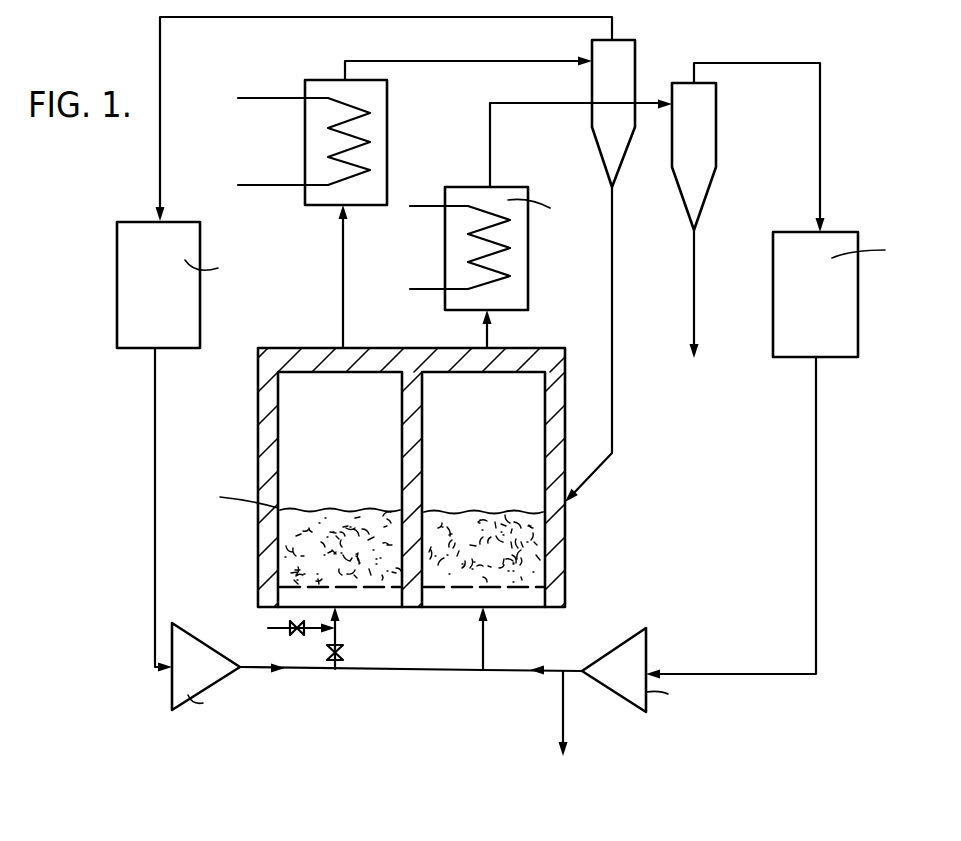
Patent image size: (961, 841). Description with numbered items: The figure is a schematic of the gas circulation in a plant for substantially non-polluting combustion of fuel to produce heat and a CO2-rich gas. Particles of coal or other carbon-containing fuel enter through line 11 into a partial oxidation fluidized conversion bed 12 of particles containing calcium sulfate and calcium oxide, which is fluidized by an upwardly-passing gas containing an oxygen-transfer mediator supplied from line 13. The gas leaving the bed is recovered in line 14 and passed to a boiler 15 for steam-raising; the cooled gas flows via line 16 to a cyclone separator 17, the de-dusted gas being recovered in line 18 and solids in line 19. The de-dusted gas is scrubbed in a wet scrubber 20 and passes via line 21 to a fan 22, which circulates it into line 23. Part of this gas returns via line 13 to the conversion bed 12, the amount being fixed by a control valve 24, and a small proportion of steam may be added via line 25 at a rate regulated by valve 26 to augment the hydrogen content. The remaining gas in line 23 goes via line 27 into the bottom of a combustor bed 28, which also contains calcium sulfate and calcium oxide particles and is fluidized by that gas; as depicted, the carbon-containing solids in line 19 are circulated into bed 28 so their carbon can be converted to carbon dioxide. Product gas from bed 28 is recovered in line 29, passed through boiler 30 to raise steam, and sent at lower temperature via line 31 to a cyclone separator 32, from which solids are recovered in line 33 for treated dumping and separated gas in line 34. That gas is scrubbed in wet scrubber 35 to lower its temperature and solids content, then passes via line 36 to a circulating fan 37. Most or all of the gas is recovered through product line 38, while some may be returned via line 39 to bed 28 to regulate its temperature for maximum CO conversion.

The fuel feed line 11 is at (240, 505).
The partial oxidation fluidized conversion bed 12 is at (300, 555).
The fluidizing gas supply line 13 is at (337, 638).
The gas recovery line 14 is at (343, 281).
The boiler 15 is at (305, 137).
The cooled gas line 16 is at (435, 61).
The cyclone separator 17 is at (625, 83).
The de-dusted gas line 18 is at (160, 67).
The solids recovery line 19 is at (612, 265).
The wet scrubber 20 is at (170, 298).
The scrubbed gas line 21 is at (155, 480).
The circulation fan 22 is at (183, 675).
The circulation gas line 23 is at (388, 672).
The control valve 24 is at (345, 655).
The steam addition line 25 is at (310, 632).
The steam valve 26 is at (297, 622).
The combustor bed gas line 27 is at (486, 637).
The combustor bed 28 is at (548, 560).
The product gas line 29 is at (487, 335).
The boiler 30 is at (445, 250).
The cooled product gas line 31 is at (490, 140).
The cyclone separator 32 is at (683, 143).
The solids recovery line 33 is at (694, 297).
The separated gas line 34 is at (820, 195).
The wet scrubber 35 is at (825, 312).
The scrubbed gas line 36 is at (816, 578).
The circulating fan 37 is at (605, 680).
The product line 38 is at (560, 713).
The recirculation line 39 is at (515, 675).